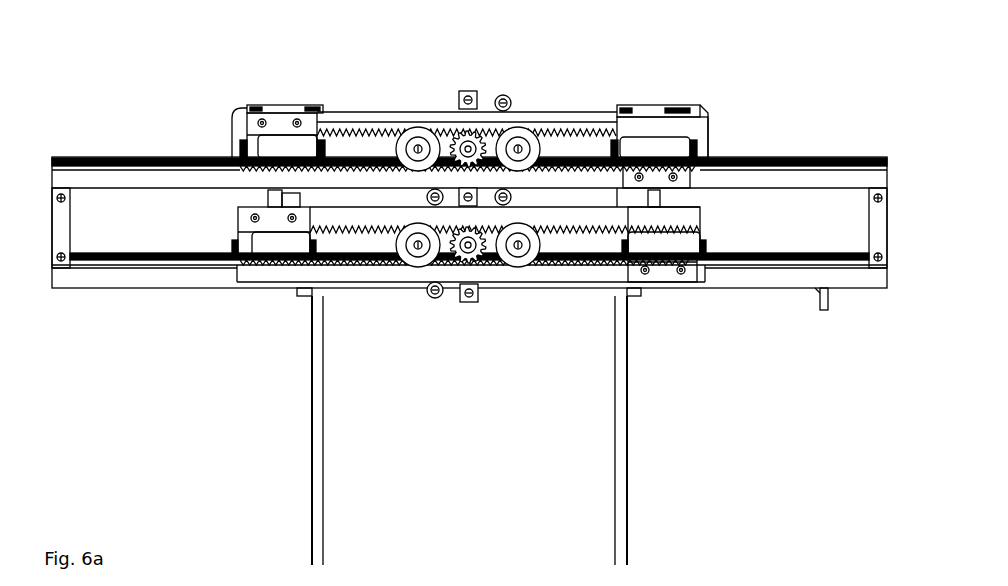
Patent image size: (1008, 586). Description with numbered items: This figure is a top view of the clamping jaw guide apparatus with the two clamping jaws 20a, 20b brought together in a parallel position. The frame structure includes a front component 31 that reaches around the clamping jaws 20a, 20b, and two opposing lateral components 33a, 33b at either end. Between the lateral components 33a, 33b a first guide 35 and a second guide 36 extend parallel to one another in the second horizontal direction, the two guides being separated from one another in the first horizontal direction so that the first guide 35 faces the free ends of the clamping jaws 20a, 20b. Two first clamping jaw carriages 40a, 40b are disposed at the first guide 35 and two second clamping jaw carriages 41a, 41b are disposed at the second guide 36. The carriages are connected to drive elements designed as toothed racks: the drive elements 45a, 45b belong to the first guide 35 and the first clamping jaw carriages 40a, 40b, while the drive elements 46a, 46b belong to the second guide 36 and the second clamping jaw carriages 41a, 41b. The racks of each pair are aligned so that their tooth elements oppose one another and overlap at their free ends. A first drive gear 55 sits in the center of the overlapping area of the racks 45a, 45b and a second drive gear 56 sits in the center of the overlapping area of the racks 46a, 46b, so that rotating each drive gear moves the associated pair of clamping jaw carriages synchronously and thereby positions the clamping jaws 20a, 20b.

The clamping jaw 20a is at (313, 497).
The clamping jaw 20b is at (618, 480).
The front component 31 is at (833, 272).
The lateral component 33a is at (63, 232).
The lateral component 33b is at (878, 227).
The first guide 35 is at (797, 258).
The second guide 36 is at (760, 160).
The first clamping jaw carriage 40a is at (275, 242).
The first clamping jaw carriage 40b is at (663, 247).
The second clamping jaw carriage 41a is at (285, 150).
The second clamping jaw carriage 41b is at (655, 148).
The drive element 45a is at (548, 217).
The drive element 45b is at (600, 273).
The drive element 46a is at (542, 122).
The drive element 46b is at (587, 178).
The first drive gear 55 is at (468, 258).
The second drive gear 56 is at (460, 140).